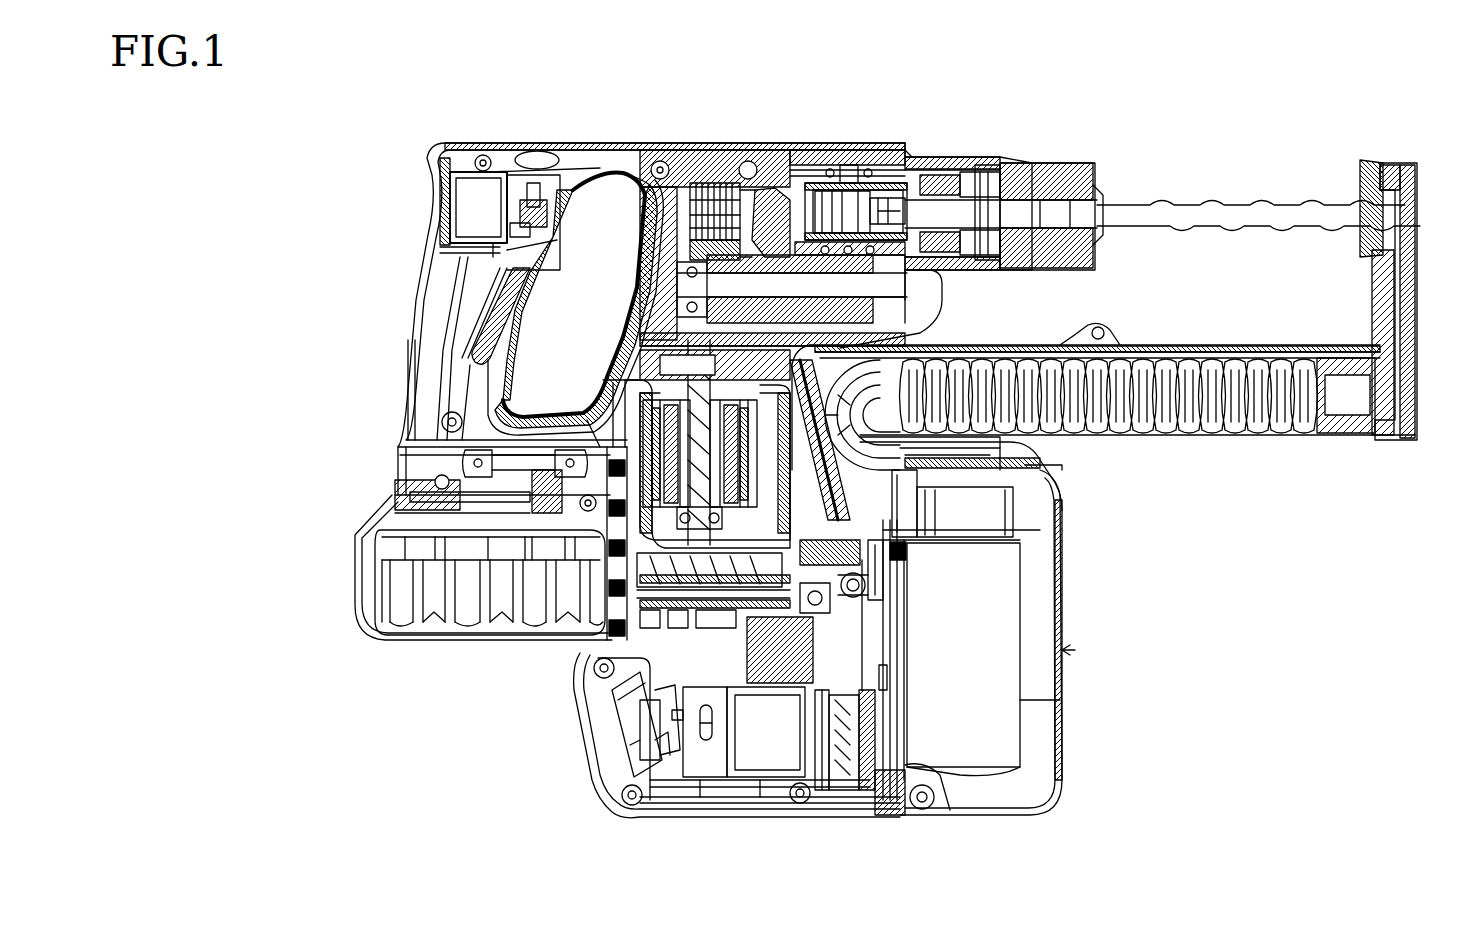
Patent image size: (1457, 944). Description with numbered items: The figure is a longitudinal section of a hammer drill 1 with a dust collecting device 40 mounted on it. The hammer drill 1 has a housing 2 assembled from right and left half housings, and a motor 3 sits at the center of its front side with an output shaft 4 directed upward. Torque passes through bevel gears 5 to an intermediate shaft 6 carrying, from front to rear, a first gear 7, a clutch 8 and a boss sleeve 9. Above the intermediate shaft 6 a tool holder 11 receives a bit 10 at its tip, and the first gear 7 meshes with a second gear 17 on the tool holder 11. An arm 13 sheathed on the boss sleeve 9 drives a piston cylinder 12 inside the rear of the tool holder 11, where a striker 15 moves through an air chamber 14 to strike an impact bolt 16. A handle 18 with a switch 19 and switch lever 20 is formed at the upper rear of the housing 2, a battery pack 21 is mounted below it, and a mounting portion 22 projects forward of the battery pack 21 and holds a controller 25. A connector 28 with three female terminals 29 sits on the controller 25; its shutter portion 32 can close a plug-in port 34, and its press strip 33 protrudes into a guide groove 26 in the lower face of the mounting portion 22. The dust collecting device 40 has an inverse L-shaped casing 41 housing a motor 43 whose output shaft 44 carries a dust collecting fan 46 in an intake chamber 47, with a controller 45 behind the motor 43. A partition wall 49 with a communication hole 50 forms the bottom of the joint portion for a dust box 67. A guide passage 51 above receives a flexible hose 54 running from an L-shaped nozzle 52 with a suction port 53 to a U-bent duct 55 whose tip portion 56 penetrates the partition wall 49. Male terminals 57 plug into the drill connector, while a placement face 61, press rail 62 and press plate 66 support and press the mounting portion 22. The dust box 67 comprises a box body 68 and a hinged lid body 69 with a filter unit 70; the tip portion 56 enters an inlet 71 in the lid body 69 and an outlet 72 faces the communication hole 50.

The hammer drill 1 is at (832, 108).
The housing 2 is at (716, 145).
The motor 3 is at (612, 380).
The output shaft 4 is at (637, 340).
The bevel gears 5 is at (645, 268).
The intermediate shaft 6 is at (925, 298).
The first gear 7 is at (878, 192).
The clutch 8 is at (808, 188).
The boss sleeve 9 is at (745, 150).
The bit 10 is at (1245, 203).
The tool holder 11 is at (970, 165).
The piston cylinder 12 is at (840, 148).
The arm 13 is at (768, 150).
The air chamber 14 is at (848, 180).
The striker 15 is at (922, 170).
The impact bolt 16 is at (990, 165).
The second gear 17 is at (905, 157).
The handle 18 is at (430, 280).
The switch 19 is at (462, 175).
The switch lever 20 is at (578, 225).
The battery pack 21 is at (464, 640).
The mounting portion 22 is at (590, 720).
The controller 25 is at (608, 595).
The guide groove 26 is at (748, 688).
The connector 28 is at (870, 585).
The female terminals 29 is at (860, 595).
The shutter portion 32 is at (905, 520).
The press strip 33 is at (795, 683).
The plug-in port 34 is at (880, 570).
The dust collecting device 40 is at (1072, 332).
The casing 41 is at (925, 345).
The motor 43 is at (745, 817).
The output shaft 44 is at (822, 810).
The controller 45 is at (594, 770).
The dust collecting fan 46 is at (866, 800).
The intake chamber 47 is at (843, 800).
The partition wall 49 is at (897, 675).
The communication hole 50 is at (907, 720).
The guide passage 51 is at (1022, 352).
The nozzle 52 is at (1302, 345).
The suction port 53 is at (1400, 165).
The flexible hose 54 is at (1222, 358).
The duct 55 is at (965, 352).
The tip portion 56 is at (878, 432).
The male terminals 57 is at (906, 552).
The placement face 61 is at (600, 620).
The press rail 62 is at (772, 690).
The press plate 66 is at (612, 690).
The dust box 67 is at (1075, 655).
The box body 68 is at (1065, 602).
The lid body 69 is at (896, 815).
The filter unit 70 is at (1020, 720).
The inlet 71 is at (912, 505).
The outlet 72 is at (900, 700).